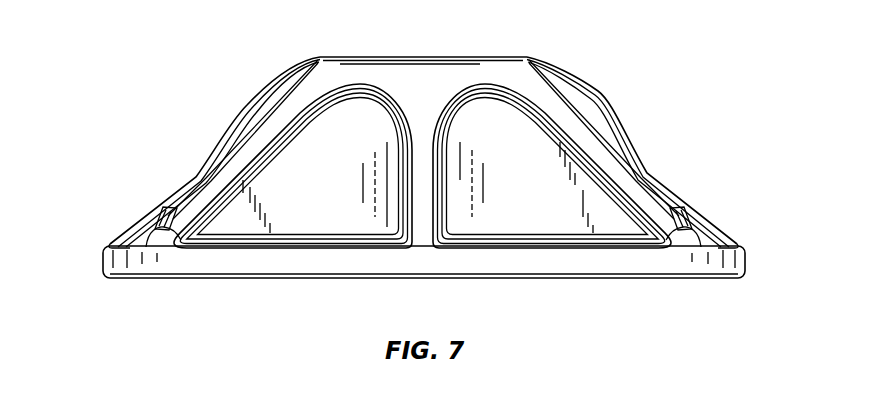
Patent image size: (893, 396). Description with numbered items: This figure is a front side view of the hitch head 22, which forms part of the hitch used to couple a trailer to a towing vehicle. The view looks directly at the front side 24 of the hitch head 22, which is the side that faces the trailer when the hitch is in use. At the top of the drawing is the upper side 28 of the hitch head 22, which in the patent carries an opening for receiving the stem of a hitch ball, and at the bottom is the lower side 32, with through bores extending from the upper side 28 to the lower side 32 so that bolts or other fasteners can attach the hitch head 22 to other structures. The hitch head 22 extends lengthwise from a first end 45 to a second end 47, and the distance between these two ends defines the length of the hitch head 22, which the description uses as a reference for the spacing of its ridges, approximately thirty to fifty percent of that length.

The hitch head 22 is at (167, 208).
The front side 24 is at (587, 202).
The upper side 28 is at (382, 56).
The lower side 32 is at (205, 279).
The first end 45 is at (103, 261).
The second end 47 is at (747, 257).